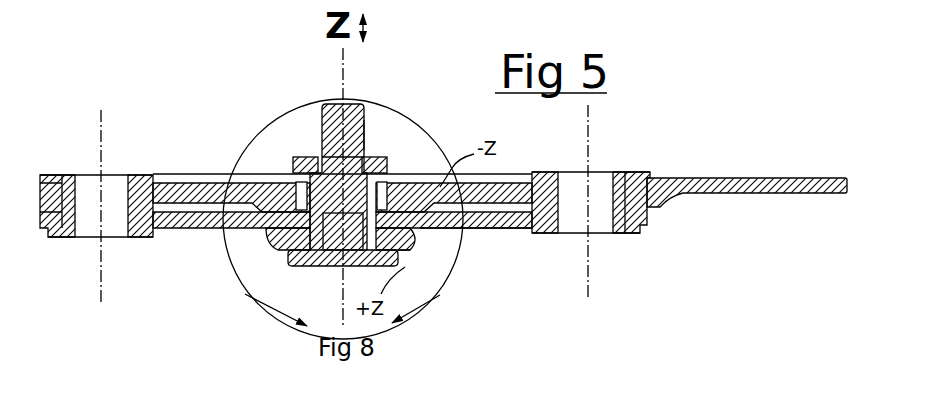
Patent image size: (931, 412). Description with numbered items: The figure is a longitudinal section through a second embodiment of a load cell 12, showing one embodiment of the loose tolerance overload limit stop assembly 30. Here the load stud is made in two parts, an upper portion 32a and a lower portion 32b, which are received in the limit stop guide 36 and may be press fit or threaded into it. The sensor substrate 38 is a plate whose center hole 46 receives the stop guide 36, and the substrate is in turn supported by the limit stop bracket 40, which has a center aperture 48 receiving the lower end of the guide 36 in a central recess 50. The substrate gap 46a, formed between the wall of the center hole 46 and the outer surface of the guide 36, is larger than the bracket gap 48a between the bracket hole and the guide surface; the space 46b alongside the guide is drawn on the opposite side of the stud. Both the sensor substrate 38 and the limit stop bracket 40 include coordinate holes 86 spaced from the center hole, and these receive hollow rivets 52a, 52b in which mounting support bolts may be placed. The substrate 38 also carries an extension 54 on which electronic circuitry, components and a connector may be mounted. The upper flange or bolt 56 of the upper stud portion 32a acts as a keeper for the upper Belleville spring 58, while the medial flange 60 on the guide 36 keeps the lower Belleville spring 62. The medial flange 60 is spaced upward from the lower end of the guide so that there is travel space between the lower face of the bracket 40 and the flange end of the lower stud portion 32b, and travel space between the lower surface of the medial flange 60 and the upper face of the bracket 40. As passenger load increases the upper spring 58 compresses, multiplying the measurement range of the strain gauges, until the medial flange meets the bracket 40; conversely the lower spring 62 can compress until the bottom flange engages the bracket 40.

The load cell 12 is at (655, 116).
The overload limit stop assembly 30 is at (450, 140).
The upper portion of the load stud 32a is at (318, 133).
The lower portion of the load stud 32b is at (299, 267).
The limit stop guide 36 is at (358, 137).
The sensor substrate 38 is at (500, 177).
The limit stop bracket 40 is at (507, 228).
The sensor substrate plate center hole 46 is at (390, 182).
The substrate gap 46a is at (282, 172).
The collar 46b is at (374, 165).
The center aperture 48 is at (413, 256).
The gap in the limit stop bracket 48a is at (315, 268).
The central recess 50 is at (438, 244).
The hollow rivet 52a is at (72, 240).
The hollow rivet 52b is at (604, 234).
The extension 54 is at (748, 178).
The upper flange or bolt 56 is at (372, 140).
The upper Belleville spring 58 is at (275, 168).
The medial flange 60 is at (284, 250).
The lower Belleville spring 62 is at (403, 247).
The coordinate holes 86 is at (125, 176).